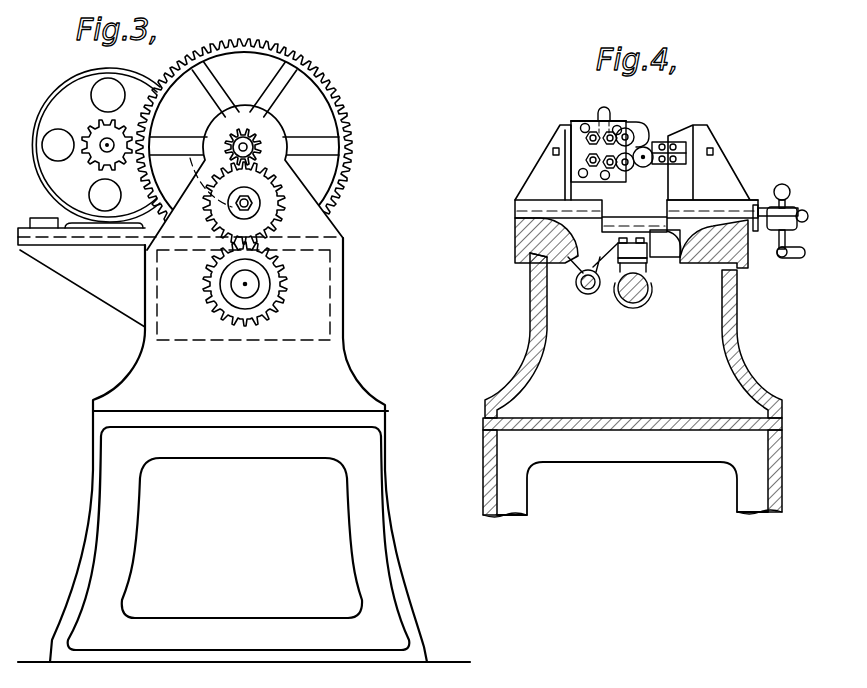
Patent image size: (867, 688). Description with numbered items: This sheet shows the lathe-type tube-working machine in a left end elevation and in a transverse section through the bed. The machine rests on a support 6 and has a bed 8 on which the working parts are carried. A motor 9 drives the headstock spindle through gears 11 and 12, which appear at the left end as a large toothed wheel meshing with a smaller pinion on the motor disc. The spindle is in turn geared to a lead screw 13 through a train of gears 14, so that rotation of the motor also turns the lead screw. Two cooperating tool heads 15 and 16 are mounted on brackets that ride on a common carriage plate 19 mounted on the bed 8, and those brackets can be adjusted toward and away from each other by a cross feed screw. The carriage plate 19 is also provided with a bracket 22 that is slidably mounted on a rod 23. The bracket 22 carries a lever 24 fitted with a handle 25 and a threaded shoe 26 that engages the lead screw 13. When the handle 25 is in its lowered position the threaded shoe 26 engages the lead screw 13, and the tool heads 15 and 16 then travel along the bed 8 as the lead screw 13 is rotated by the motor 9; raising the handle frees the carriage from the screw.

In FIG. 3, the support 6 is at (91, 480).
In FIG. 4, the bed 8 is at (532, 308).
In FIG. 3, the motor 9 is at (65, 80).
In FIG. 3, the gear 11 is at (105, 195).
In FIG. 3, the gear 12 is at (348, 163).
In FIG. 4, the lead screw 13 is at (625, 301).
In FIG. 3, the train of gears 14 is at (270, 263).
In FIG. 4, the tool head 15 is at (684, 128).
In FIG. 4, the tool head 16 is at (589, 114).
In FIG. 4, the carriage plate 19 is at (515, 237).
In FIG. 4, the bracket 22 is at (545, 278).
In FIG. 4, the rod 23 is at (585, 291).
In FIG. 4, the lever 24 is at (670, 251).
In FIG. 4, the handle 25 is at (797, 207).
In FIG. 4, the threaded shoe 26 is at (654, 302).